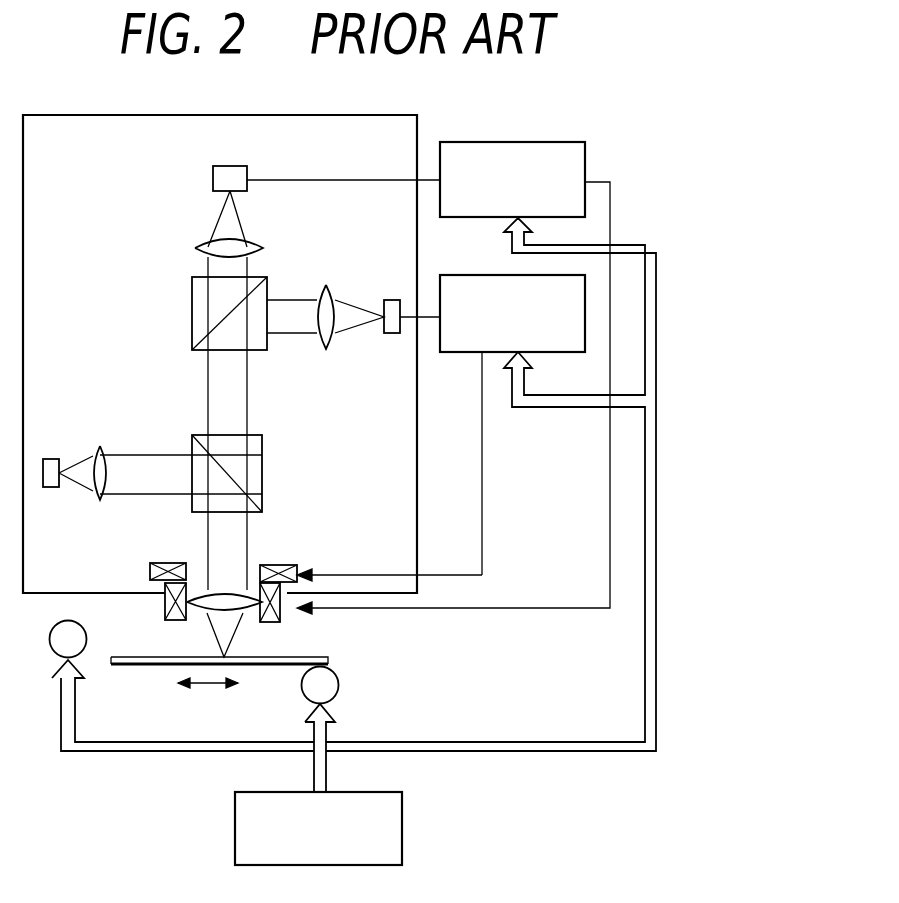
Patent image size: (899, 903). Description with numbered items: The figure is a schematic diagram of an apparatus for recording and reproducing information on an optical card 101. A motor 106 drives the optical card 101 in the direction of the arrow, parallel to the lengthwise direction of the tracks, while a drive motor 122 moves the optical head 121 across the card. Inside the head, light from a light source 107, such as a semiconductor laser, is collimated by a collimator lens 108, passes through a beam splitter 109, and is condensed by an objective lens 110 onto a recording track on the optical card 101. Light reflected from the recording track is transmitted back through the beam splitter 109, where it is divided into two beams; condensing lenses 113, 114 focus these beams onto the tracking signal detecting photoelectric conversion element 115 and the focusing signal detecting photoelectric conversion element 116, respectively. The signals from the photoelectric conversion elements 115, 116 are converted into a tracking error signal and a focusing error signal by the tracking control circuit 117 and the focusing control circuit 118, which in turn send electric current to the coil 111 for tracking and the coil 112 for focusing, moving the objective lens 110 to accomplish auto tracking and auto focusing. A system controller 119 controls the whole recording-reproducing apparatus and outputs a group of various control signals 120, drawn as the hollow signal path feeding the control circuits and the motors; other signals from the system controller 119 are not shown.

The optical card 101 is at (127, 665).
The motor 106 is at (339, 685).
The light source 107 is at (52, 488).
The collimator lens 108 is at (110, 482).
The beam splitter 109 is at (190, 306).
The objective lens 110 is at (250, 592).
The coil for tracking 111 is at (294, 565).
The coil for focusing 112 is at (296, 616).
The condensing lens 113 is at (321, 285).
The condensing lens 114 is at (204, 241).
The photoelectric conversion element 115 is at (391, 299).
The photoelectric conversion element 116 is at (250, 166).
The tracking control circuit 117 is at (468, 275).
The focusing control circuit 118 is at (519, 142).
The system controller 119 is at (403, 838).
The group of control signals 120 is at (487, 742).
The optical head 121 is at (93, 113).
The drive motor 122 is at (86, 640).